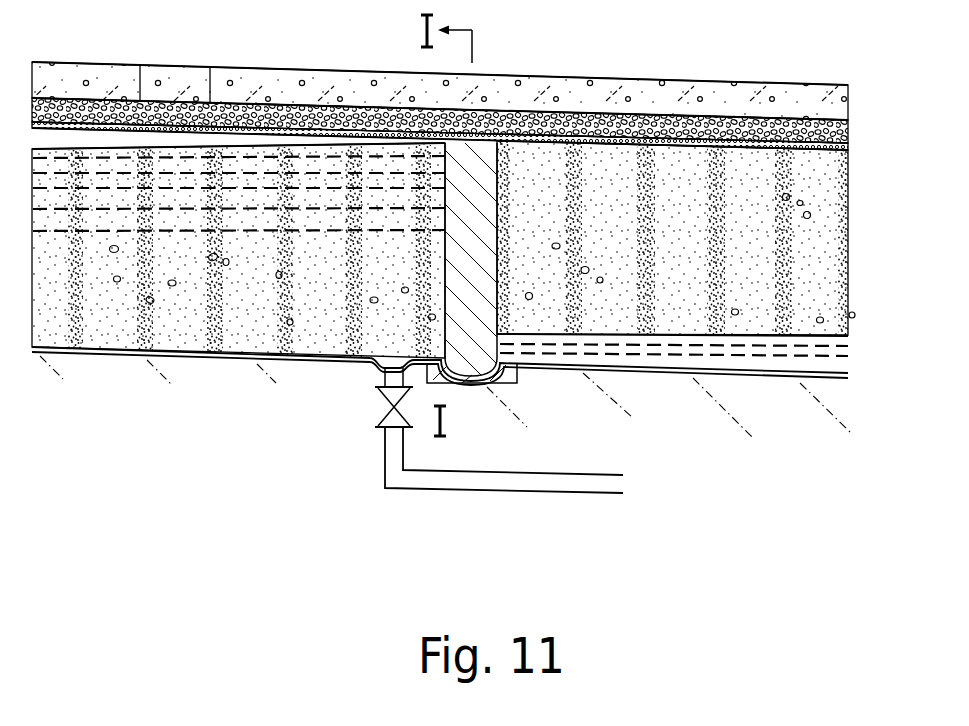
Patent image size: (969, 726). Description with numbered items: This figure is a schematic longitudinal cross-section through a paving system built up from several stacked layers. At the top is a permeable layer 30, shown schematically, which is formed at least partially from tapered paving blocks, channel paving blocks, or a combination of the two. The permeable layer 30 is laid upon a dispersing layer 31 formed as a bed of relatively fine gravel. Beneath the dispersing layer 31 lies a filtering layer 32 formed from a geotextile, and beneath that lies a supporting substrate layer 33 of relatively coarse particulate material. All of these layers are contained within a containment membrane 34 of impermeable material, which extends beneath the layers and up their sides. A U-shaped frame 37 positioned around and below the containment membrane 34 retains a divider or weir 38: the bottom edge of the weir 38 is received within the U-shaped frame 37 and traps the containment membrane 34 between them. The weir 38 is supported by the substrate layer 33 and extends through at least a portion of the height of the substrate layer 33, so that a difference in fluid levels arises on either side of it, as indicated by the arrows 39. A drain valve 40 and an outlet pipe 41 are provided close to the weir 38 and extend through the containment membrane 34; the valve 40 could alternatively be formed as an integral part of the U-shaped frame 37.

The permeable layer 30 is at (265, 78).
The dispersing layer 31 is at (567, 117).
The filtering layer 32 is at (703, 143).
The supporting substrate layer 33 is at (732, 182).
The containment membrane 34 is at (738, 376).
The U-shaped frame 37 is at (471, 383).
The weir 38 is at (485, 342).
The arrows 39 is at (143, 137).
The drain valve 40 is at (388, 403).
The outlet pipe 41 is at (473, 493).